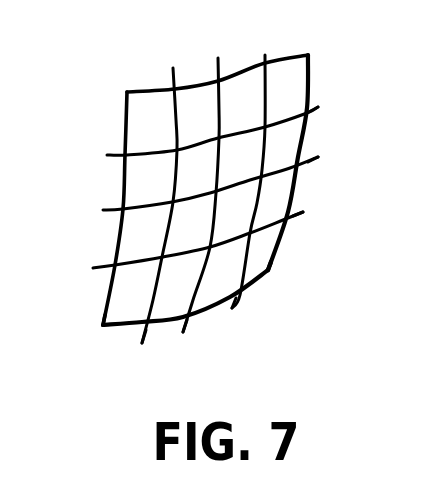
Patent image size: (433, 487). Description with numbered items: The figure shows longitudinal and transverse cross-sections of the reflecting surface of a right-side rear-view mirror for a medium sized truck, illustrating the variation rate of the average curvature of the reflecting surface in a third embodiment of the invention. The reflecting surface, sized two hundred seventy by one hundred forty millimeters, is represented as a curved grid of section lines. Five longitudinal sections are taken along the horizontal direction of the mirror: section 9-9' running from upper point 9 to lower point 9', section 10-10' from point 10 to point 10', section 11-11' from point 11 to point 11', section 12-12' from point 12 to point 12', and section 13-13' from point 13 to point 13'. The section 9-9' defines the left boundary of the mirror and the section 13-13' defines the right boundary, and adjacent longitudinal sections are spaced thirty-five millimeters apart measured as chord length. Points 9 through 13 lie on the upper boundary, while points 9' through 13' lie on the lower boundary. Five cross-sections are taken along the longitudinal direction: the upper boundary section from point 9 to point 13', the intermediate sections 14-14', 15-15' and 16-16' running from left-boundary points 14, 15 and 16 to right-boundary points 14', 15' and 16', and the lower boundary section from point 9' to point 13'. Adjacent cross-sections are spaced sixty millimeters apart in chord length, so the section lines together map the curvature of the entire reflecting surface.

The point 9 is at (118, 180).
The point 10 is at (164, 187).
The point 11 is at (204, 175).
The point 12 is at (253, 162).
The point 13 is at (293, 143).
The point 14 is at (194, 139).
The point 15 is at (193, 192).
The point 16 is at (182, 248).
The point 9' is at (105, 344).
The point 10' is at (148, 351).
The point 11' is at (187, 344).
The point 12' is at (230, 324).
The point 13' is at (284, 283).
The point 14' is at (331, 107).
The point 15' is at (332, 156).
The point 16' is at (318, 210).